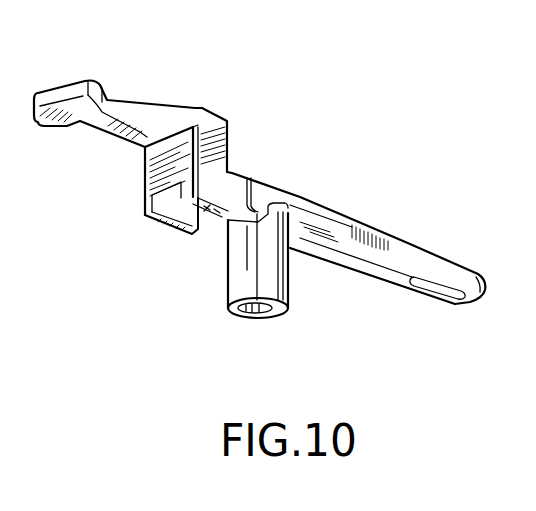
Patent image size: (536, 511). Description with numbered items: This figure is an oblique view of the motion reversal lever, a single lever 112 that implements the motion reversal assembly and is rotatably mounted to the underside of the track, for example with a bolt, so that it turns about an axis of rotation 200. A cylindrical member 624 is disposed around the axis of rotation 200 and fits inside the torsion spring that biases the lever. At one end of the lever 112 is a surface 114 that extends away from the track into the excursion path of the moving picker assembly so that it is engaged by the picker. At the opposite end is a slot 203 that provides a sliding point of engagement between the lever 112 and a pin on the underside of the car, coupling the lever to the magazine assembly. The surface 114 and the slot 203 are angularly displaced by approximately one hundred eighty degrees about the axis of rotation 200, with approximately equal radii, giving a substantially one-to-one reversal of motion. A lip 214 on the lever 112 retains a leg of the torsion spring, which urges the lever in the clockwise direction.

The surface 114 is at (110, 88).
The lever 112 is at (222, 142).
The lip 214 is at (212, 213).
The cylindrical member 624 is at (277, 282).
The axis of rotation 200 is at (258, 318).
The slot 203 is at (437, 288).